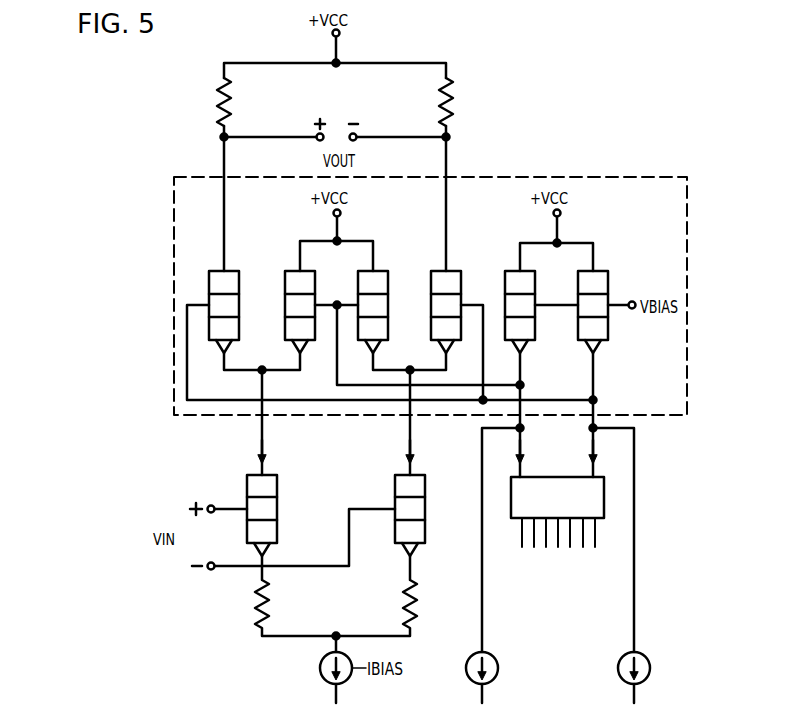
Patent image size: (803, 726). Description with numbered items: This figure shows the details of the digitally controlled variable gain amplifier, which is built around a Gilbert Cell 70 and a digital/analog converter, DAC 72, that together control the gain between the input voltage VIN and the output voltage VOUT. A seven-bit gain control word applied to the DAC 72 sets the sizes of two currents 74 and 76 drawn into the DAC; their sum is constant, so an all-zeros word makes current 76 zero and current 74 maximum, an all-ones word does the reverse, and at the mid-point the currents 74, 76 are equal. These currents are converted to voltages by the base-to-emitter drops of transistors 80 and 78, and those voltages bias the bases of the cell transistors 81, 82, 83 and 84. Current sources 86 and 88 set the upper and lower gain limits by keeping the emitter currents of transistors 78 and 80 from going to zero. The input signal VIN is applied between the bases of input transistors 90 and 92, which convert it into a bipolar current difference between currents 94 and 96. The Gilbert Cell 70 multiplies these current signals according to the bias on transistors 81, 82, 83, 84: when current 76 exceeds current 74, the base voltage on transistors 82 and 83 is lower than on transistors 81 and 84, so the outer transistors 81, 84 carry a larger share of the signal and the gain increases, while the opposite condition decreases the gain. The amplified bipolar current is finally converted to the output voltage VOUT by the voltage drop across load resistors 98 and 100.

The Gilbert Cell 70 is at (505, 177).
The digital/analog converter (DAC) 72 is at (604, 500).
The current 74 is at (596, 446).
The current 76 is at (523, 446).
The transistor 78 is at (609, 286).
The transistor 80 is at (536, 286).
The transistor 81 is at (240, 286).
The transistor 82 is at (316, 286).
The transistor 83 is at (389, 286).
The transistor 84 is at (462, 286).
The current source 86 is at (650, 668).
The current source 88 is at (498, 668).
The transistor 90 is at (278, 506).
The transistor 92 is at (426, 506).
The current 94 is at (267, 446).
The current 96 is at (405, 446).
The resistor 98 is at (230, 108).
The resistor 100 is at (452, 108).